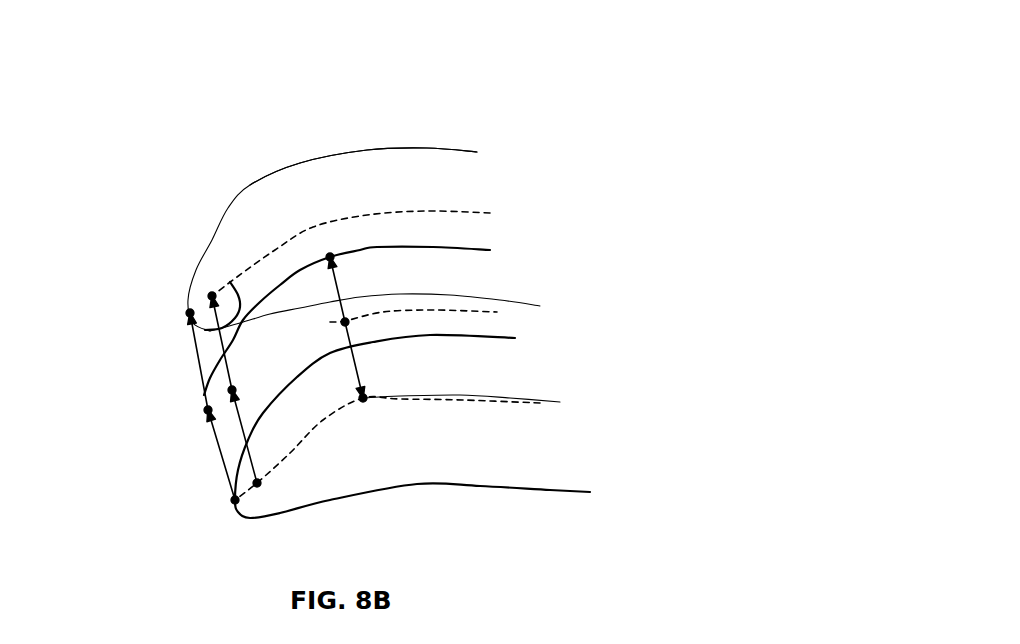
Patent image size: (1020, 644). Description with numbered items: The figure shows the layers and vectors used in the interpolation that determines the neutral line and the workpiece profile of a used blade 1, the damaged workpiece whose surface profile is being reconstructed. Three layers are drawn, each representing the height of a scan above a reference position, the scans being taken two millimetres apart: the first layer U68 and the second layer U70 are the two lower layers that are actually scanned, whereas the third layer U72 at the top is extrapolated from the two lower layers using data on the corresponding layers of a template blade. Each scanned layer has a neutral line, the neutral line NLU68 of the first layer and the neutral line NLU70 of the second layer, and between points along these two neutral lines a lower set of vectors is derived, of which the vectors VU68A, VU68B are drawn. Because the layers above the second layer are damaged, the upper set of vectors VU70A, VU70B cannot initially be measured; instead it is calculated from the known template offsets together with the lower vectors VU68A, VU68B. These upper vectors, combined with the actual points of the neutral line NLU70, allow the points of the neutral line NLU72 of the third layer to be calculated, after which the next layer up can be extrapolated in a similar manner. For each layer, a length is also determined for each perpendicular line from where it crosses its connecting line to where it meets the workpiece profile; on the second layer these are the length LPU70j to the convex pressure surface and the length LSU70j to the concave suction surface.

The used blade 1 is at (305, 126).
The third layer of the used blade U72 is at (475, 150).
The neutral line of the third layer of the used workpiece NLU72 is at (488, 208).
The second layer of the used blade U70 is at (490, 252).
The neutral line of the second layer of the used workpiece NLU70 is at (503, 312).
The first layer of the used blade U68 is at (510, 337).
The neutral line of the first layer of the used workpiece NLU68 is at (530, 402).
The upper vector of the used workpiece VU70A is at (197, 353).
The upper vector of the used workpiece VU70B is at (230, 282).
The lower vector of the used workpiece VU68A is at (210, 445).
The lower vector of the used workpiece VU68B is at (247, 448).
The length of perpendicular line to the convex (pressure) surface LPU70j is at (334, 280).
The length of perpendicular line to the concave (suction) surface LSU70j is at (355, 362).